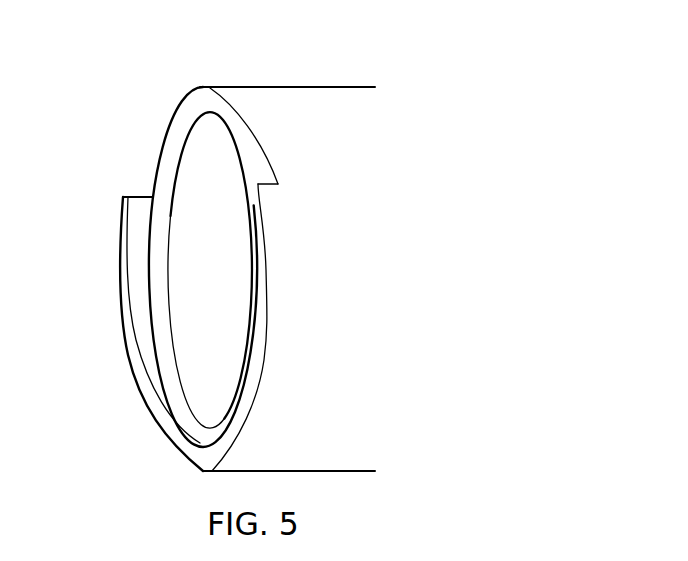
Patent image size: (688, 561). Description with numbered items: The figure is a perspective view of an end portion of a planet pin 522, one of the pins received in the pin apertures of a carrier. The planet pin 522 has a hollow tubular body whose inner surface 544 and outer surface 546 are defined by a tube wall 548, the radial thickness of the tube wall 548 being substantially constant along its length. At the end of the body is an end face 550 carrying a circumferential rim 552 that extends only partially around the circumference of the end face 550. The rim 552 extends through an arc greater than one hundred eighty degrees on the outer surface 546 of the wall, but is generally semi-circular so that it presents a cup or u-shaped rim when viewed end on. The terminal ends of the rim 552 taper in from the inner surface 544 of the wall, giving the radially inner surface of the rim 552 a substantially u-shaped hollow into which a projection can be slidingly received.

The planet pin 522 is at (208, 239).
The inner surface 544 is at (228, 274).
The outer surface 546 is at (354, 304).
The tube wall 548 is at (245, 86).
The end face 550 is at (170, 157).
The circumferential rim 552 is at (125, 298).